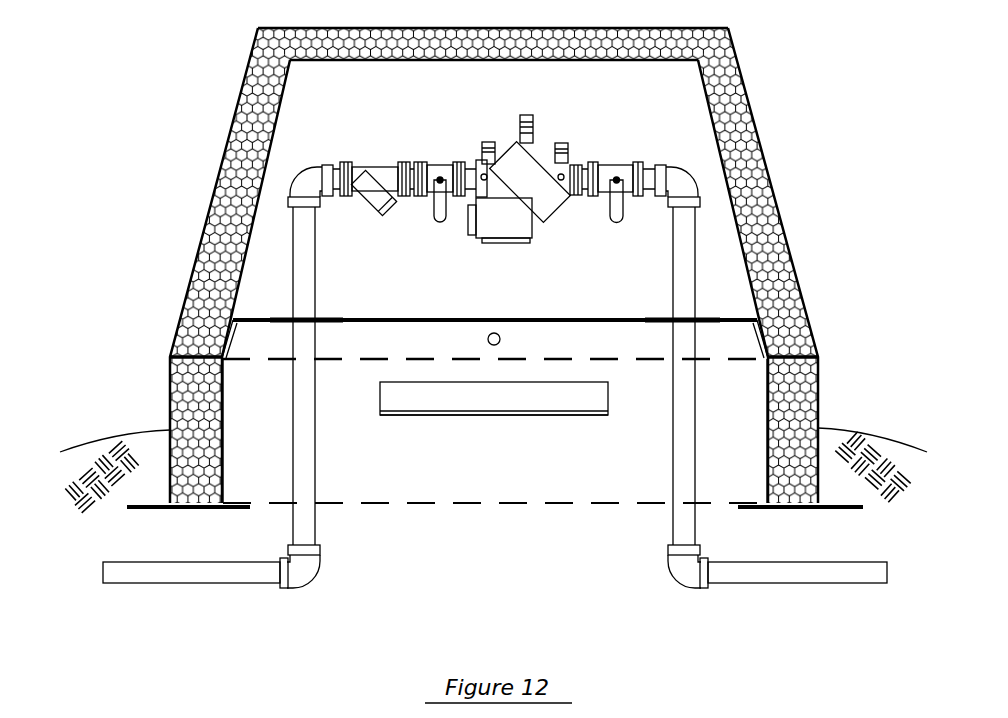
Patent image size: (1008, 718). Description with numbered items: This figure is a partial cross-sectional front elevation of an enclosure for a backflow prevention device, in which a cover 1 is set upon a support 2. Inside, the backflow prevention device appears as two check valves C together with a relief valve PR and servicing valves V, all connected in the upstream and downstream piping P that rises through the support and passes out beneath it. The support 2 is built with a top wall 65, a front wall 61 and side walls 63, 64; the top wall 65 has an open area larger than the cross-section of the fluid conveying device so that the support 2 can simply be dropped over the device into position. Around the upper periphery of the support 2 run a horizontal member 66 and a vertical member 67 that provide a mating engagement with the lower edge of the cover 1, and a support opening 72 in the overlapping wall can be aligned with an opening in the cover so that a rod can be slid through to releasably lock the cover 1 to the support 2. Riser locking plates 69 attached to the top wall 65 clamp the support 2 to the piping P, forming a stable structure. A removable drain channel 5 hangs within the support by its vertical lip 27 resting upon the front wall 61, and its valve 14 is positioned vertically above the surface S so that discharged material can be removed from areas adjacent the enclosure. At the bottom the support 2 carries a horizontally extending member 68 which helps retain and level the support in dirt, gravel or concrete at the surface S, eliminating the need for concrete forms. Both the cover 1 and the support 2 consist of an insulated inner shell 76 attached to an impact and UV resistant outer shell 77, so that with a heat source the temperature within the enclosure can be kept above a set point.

The cover 1 is at (799, 120).
The support 2 is at (845, 370).
The drain channel 5 is at (375, 400).
The valve 14 is at (518, 409).
The vertical lip 27 is at (505, 423).
The front wall 61 is at (524, 480).
The side wall 63 is at (170, 450).
The side wall 64 is at (818, 468).
The top wall 65 is at (237, 312).
The horizontal member 66 is at (180, 330).
The vertical member 67 is at (763, 332).
The horizontal extending member 68 is at (163, 508).
The riser locking plate 69 is at (330, 308).
The support opening 72 is at (508, 339).
The insulated inner shell 76 is at (760, 207).
The outer shell 77 is at (216, 152).
The piping P is at (317, 456).
The servicing valve V is at (435, 165).
The check valve C is at (502, 150).
The relief valve PR is at (477, 247).
The surface S is at (118, 436).